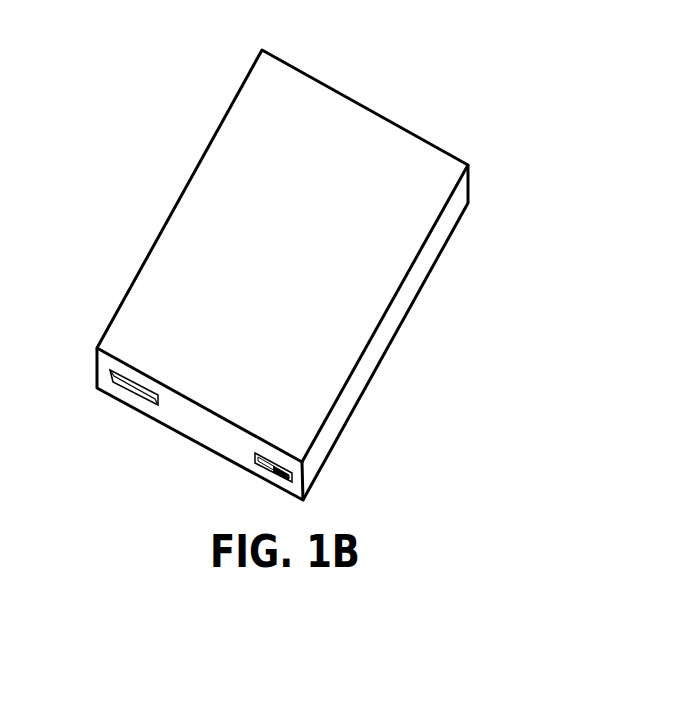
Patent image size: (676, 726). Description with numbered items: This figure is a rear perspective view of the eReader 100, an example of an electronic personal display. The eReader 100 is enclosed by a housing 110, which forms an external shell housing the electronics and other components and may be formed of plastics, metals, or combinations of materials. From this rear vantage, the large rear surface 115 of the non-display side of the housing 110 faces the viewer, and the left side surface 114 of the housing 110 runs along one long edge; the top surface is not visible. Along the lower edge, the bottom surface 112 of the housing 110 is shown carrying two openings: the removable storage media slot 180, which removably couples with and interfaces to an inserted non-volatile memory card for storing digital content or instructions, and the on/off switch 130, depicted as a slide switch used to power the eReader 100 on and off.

The eReader 100 is at (298, 282).
The housing 110 is at (313, 275).
The bottom surface 112 is at (185, 418).
The left side surface 114 is at (397, 322).
The rear surface 115 is at (398, 188).
The on/off switch 130 is at (272, 477).
The removable storage media slot 180 is at (118, 385).